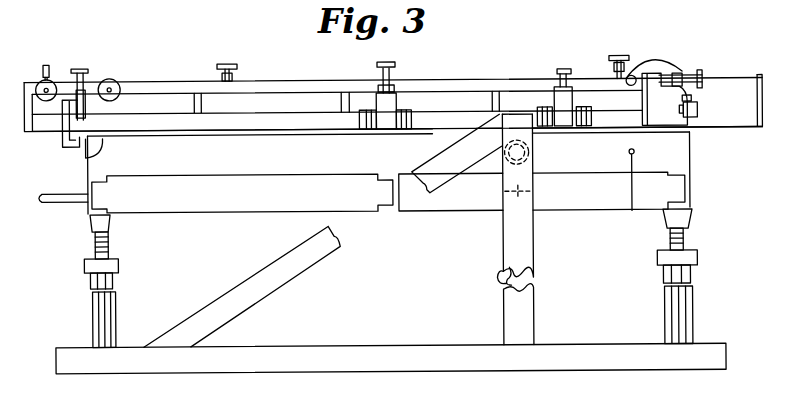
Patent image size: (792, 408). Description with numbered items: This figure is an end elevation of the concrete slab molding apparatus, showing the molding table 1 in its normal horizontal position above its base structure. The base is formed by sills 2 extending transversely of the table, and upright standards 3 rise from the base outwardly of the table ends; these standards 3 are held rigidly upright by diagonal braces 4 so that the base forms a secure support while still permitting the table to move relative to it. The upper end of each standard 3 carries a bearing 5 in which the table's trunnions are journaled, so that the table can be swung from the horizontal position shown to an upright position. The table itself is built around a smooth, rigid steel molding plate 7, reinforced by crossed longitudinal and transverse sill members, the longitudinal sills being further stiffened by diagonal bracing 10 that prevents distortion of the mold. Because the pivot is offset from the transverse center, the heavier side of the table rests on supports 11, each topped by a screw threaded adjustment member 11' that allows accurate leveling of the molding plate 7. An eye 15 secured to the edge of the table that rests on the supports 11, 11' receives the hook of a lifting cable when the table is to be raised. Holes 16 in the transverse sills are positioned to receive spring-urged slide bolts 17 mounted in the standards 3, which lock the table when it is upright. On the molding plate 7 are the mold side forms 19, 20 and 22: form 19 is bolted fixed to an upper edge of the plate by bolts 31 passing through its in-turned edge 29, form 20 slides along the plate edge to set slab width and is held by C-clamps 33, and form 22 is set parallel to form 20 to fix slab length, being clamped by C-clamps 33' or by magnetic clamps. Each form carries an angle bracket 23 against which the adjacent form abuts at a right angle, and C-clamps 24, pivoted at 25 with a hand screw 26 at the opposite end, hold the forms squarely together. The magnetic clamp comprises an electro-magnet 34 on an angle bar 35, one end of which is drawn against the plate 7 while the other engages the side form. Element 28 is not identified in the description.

The molding table 1 is at (481, 79).
The sills 2 is at (618, 346).
The upright standards 3 is at (531, 307).
The diagonal braces 4 is at (272, 268).
The bearings 5 is at (528, 194).
The molding plate 7 is at (92, 150).
The diagonal bracing 10 is at (219, 204).
The supports 11 is at (393, 297).
The screw threaded adjustment member 11' is at (409, 249).
The eye 15 is at (42, 196).
The holes 16 is at (632, 212).
The slide bolts 17 is at (497, 286).
The mold side form 19 is at (696, 120).
The mold side form 20 is at (720, 80).
The mold side form 22 is at (325, 79).
The angle bracket 23 is at (646, 127).
The C-clamps 24 is at (110, 72).
The pivot 25 is at (636, 77).
The hand screw 26 is at (112, 78).
The channel 28 is at (280, 81).
The in-turned edge 29 is at (440, 117).
The bolts 31 is at (696, 104).
The C-clamps 33 is at (426, 53).
The C-clamps 33' is at (43, 131).
The electro-magnet 34 is at (366, 111).
The angle bar 35 is at (388, 100).